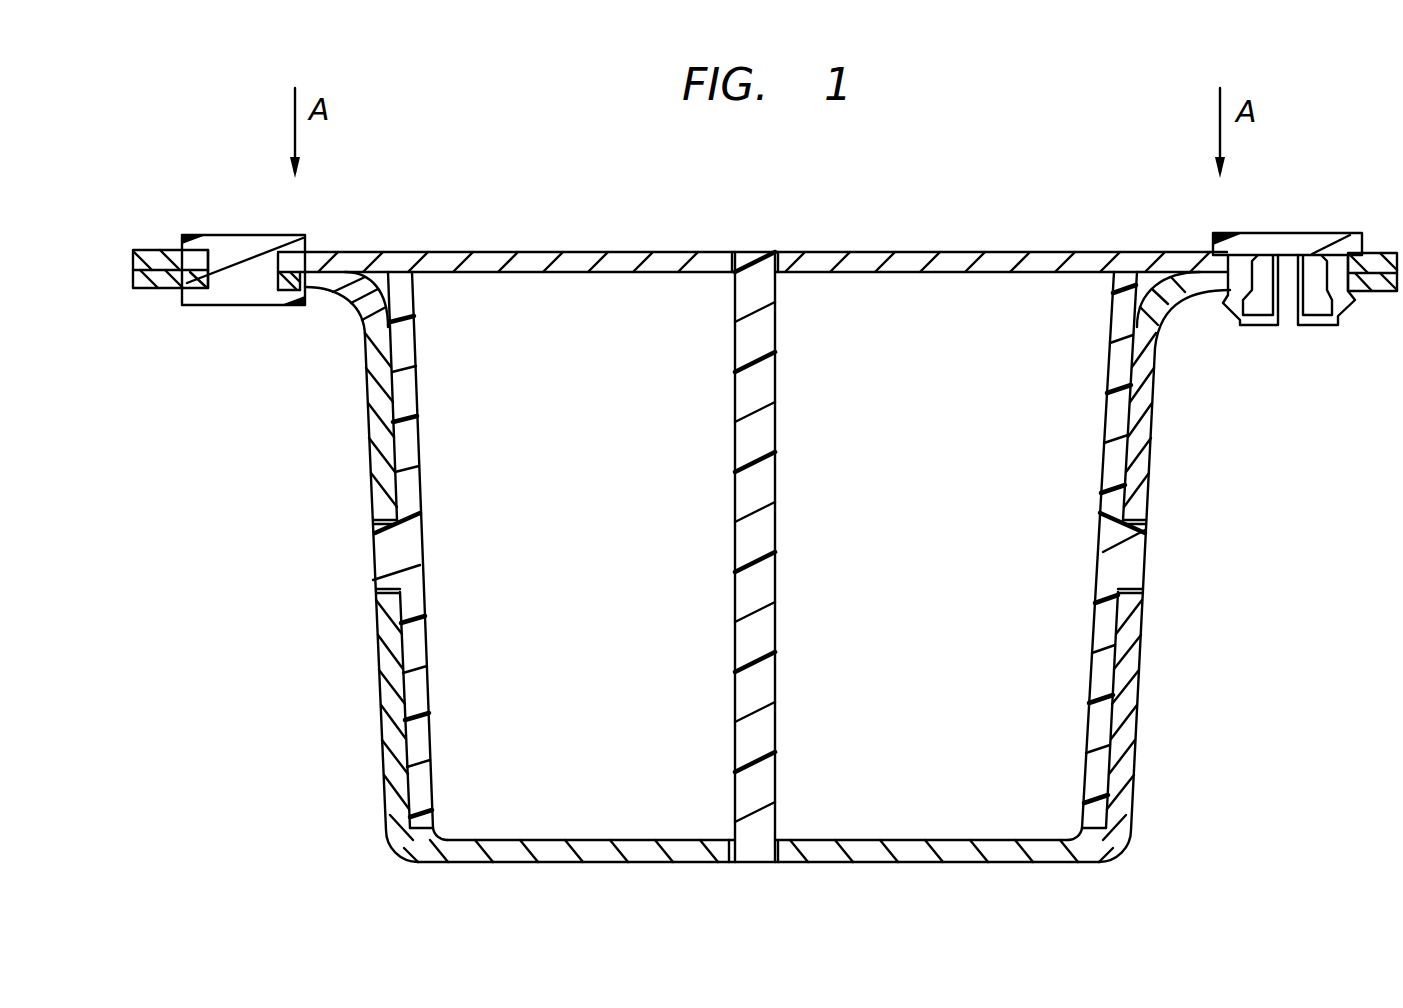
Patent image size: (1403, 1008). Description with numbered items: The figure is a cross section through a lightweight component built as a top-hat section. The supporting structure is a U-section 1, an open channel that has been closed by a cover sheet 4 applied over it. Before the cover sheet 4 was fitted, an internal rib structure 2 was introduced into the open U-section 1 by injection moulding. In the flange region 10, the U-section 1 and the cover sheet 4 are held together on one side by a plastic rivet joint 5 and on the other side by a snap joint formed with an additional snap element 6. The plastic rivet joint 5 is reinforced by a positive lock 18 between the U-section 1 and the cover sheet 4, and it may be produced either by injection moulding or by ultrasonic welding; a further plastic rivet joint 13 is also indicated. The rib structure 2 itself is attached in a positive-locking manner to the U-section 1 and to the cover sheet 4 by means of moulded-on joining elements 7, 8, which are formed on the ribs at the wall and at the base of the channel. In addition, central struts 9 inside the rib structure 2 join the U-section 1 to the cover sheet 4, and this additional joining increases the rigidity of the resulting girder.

The U-section 1 is at (383, 712).
The rib structure 2 is at (410, 639).
The cover sheet 4 is at (545, 258).
The plastic rivet joint 5 is at (267, 248).
The snap element 6 is at (1293, 243).
The moulded-on joining element 7 is at (375, 557).
The moulded-on joining element 8 is at (757, 843).
The central strut 9 is at (762, 318).
The flange region 10 is at (146, 283).
The plastic rivet joint 13 is at (467, 733).
The positive lock 18 is at (200, 273).